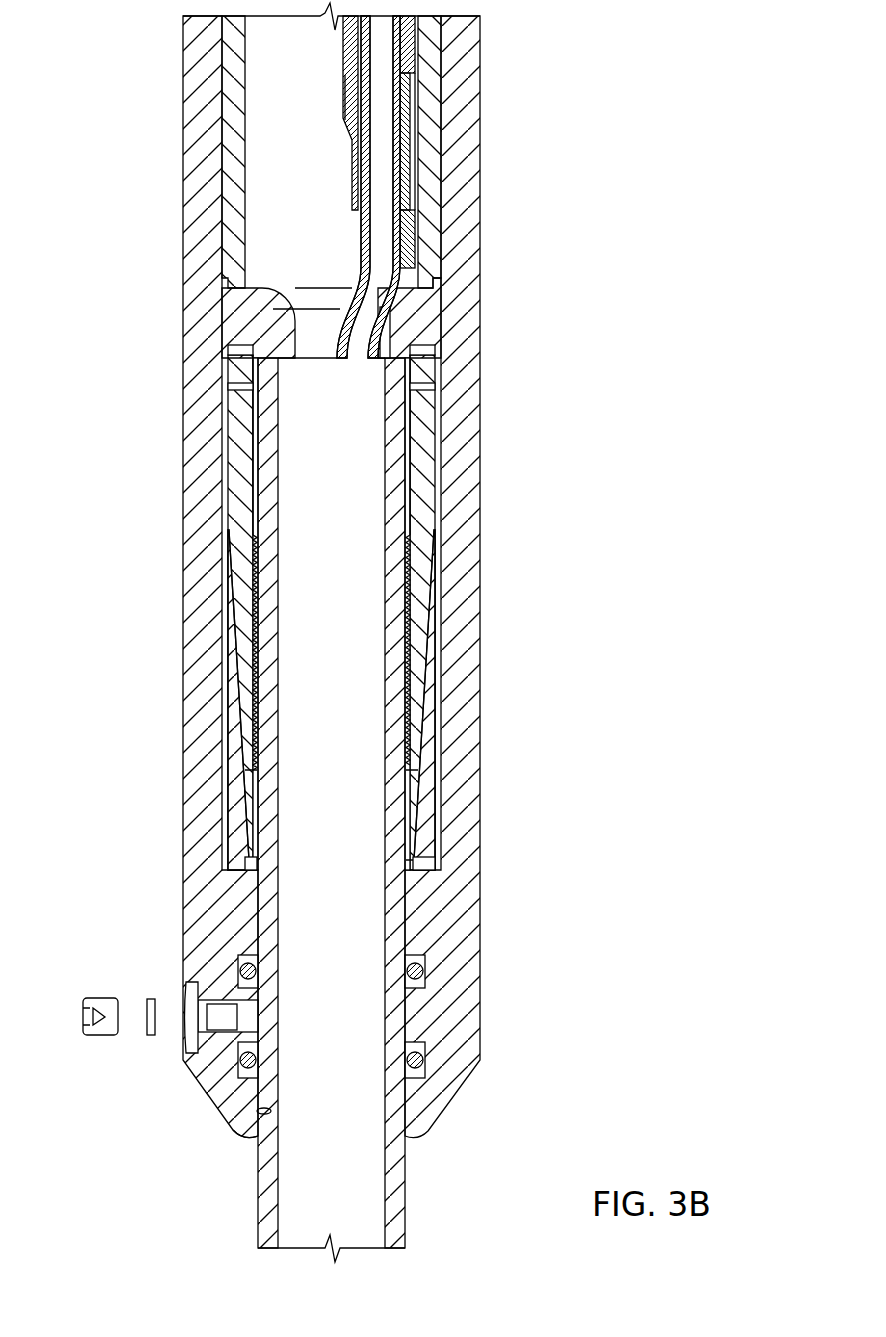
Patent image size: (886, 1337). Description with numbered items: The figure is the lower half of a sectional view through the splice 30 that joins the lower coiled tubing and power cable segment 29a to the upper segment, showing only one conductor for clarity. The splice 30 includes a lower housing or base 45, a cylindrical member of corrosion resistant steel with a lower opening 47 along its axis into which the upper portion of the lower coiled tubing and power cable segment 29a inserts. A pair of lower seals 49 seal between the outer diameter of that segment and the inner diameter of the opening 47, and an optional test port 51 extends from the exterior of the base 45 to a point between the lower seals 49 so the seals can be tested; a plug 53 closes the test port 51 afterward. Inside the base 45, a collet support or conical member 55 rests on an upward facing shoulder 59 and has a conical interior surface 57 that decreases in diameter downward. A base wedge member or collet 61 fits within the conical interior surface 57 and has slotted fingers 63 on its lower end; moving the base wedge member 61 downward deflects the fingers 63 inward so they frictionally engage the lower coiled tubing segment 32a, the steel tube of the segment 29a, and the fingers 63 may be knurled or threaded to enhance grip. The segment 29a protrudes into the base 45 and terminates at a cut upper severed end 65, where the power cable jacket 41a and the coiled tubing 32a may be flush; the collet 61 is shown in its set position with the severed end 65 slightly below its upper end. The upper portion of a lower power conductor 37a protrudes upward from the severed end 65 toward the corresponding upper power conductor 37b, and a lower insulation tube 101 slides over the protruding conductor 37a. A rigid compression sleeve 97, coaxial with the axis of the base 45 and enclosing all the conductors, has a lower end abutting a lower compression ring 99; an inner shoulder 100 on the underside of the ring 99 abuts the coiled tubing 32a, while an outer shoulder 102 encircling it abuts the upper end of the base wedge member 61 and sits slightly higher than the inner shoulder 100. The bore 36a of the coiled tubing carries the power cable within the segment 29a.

The splice 30 is at (155, 145).
The base 45 is at (190, 790).
The lower insulation tube 101 is at (417, 35).
The lower compression ring 99 is at (440, 335).
The upper severed end 65 is at (293, 350).
The compression sleeve 97 is at (433, 143).
The upper power conductor 37b is at (402, 260).
The lower power conductor 37a is at (382, 227).
The base wedge member 61 is at (222, 455).
The fingers 63 is at (240, 577).
The conical member 55 is at (230, 733).
The conical interior surface 57 is at (252, 672).
The outer shoulder 102 is at (235, 388).
The inner shoulder 100 is at (410, 395).
The upward facing shoulder 59 is at (440, 848).
The lower seals 49 is at (240, 955).
The test port 51 is at (235, 1012).
The plug 53 is at (100, 997).
The lower opening 47 is at (260, 1113).
The lower coiled tubing and power cable segment 29a is at (335, 824).
The power cable jacket 41a is at (293, 1215).
The lower coiled tubing segment 32a is at (400, 1217).
The bore 36a is at (355, 1230).